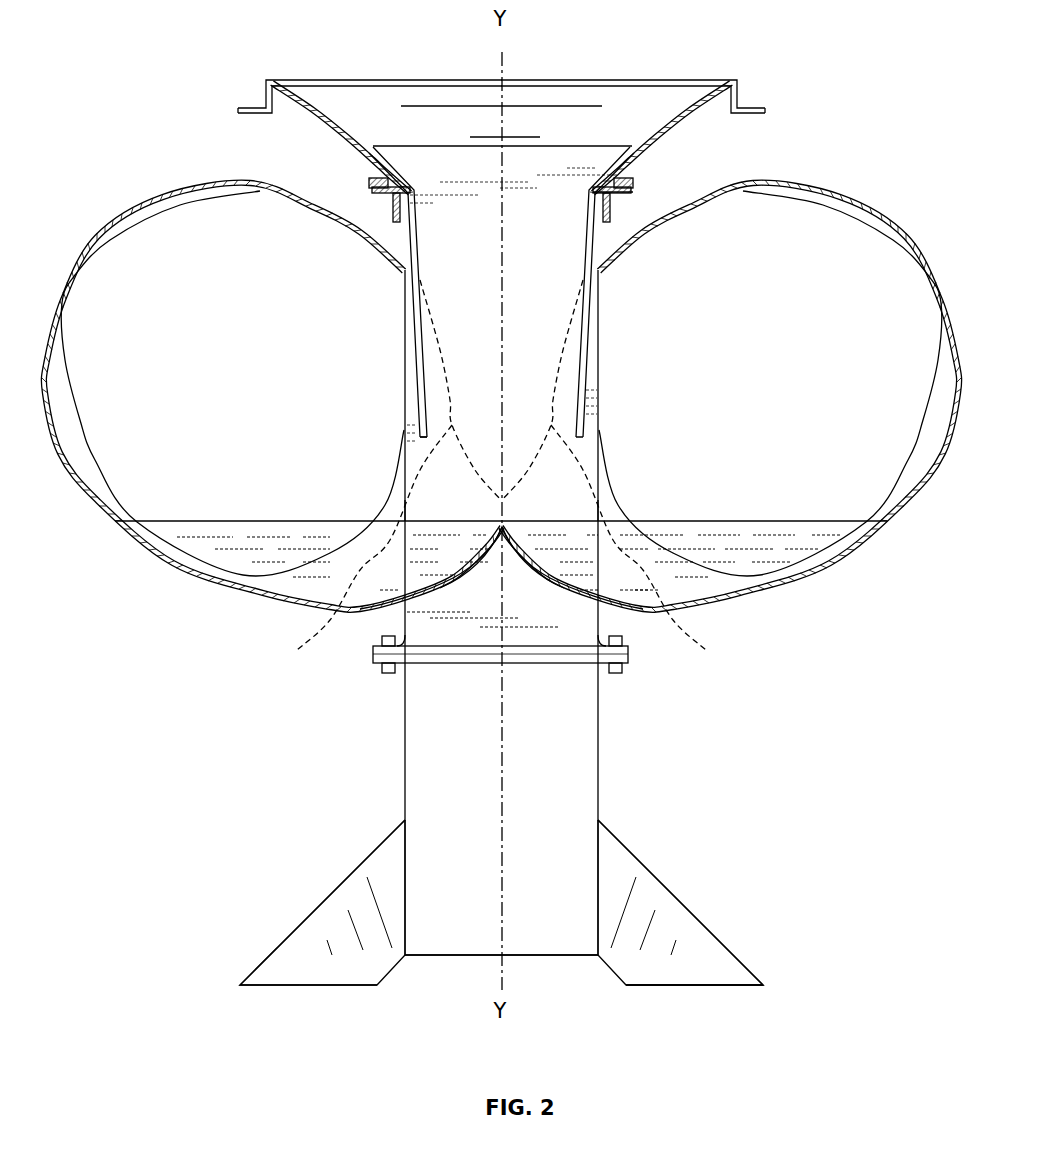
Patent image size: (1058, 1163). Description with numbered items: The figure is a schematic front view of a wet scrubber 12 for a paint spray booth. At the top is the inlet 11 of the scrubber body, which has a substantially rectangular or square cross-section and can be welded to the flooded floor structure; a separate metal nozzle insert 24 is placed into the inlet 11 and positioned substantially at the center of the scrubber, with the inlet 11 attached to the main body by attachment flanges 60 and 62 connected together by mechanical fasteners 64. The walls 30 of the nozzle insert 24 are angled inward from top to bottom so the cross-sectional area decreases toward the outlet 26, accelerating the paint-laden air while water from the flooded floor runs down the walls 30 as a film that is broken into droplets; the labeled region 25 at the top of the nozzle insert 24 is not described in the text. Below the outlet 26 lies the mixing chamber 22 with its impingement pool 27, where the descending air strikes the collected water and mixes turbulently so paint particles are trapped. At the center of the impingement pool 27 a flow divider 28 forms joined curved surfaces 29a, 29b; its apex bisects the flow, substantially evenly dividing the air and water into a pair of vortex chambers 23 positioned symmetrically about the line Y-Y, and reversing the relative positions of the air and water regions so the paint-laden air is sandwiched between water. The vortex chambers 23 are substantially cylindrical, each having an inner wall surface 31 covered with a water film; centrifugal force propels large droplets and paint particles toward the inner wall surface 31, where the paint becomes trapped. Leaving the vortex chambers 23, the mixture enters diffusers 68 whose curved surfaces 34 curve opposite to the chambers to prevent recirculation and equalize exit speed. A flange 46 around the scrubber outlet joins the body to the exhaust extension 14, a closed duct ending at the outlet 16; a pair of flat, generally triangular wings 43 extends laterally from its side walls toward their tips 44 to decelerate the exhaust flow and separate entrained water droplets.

The inlet 11 is at (660, 120).
The wet scrubber 12 is at (336, 808).
The exhaust extension 14 is at (600, 804).
The outlet 16 is at (558, 957).
The mixing chamber 22 is at (511, 321).
The vortex chambers 23 is at (223, 376).
The nozzle insert 24 is at (390, 183).
The inlet opening 25 is at (536, 136).
The outlet 26 is at (445, 436).
The impingement pool 27 is at (733, 520).
The flow divider 28 is at (505, 522).
The curved surface 29a is at (453, 583).
The curved surface 29b is at (543, 585).
The walls 30 is at (395, 168).
The inner wall surface 31 is at (262, 195).
The curved surfaces 34 is at (544, 440).
The wings 43 is at (700, 927).
The tip 44 is at (766, 985).
The flange 46 is at (620, 630).
The attachment flange 60 is at (637, 190).
The attachment flange 62 is at (610, 200).
The mechanical fasteners 64 is at (627, 180).
The diffuser 68 is at (451, 517).